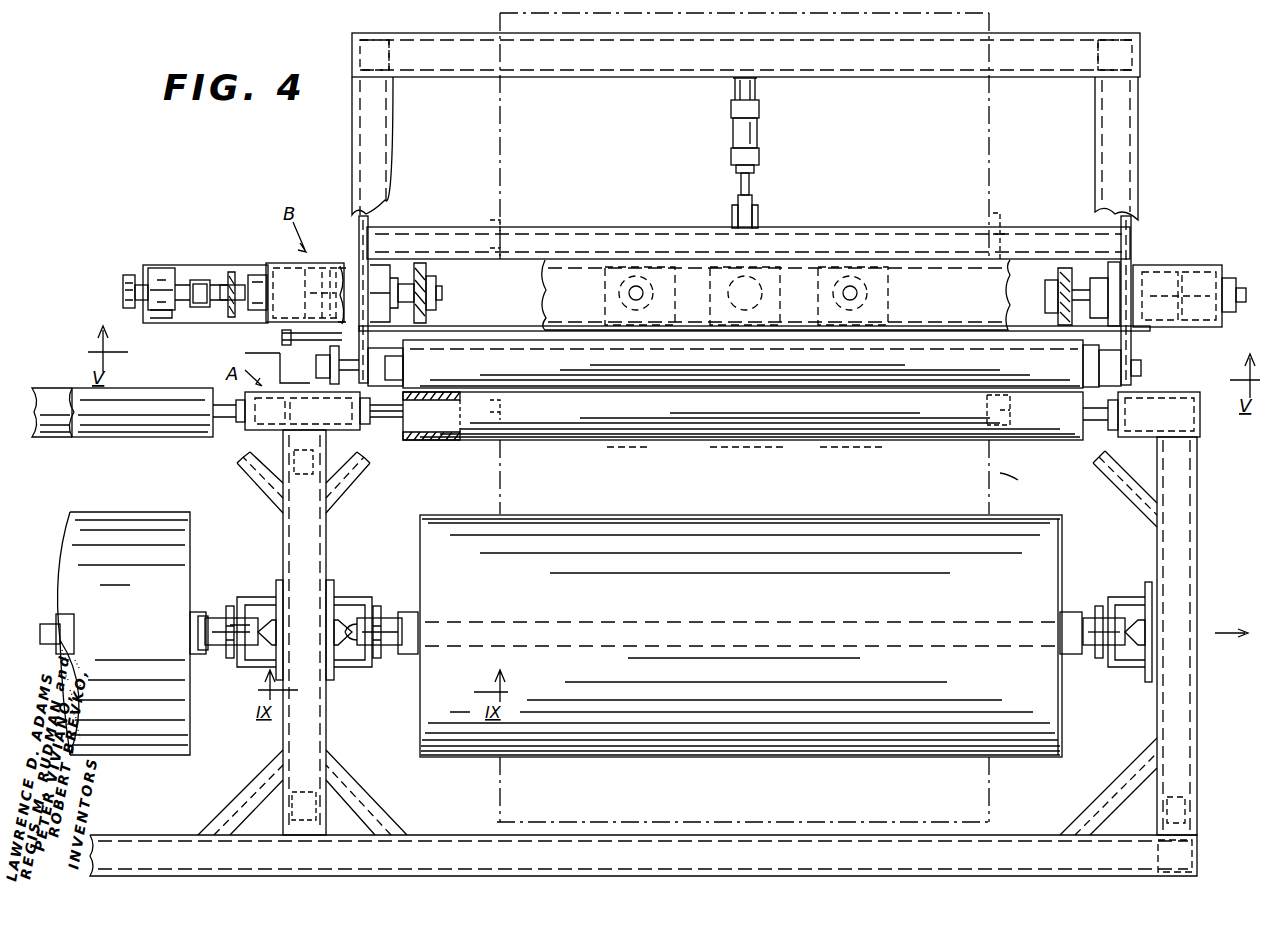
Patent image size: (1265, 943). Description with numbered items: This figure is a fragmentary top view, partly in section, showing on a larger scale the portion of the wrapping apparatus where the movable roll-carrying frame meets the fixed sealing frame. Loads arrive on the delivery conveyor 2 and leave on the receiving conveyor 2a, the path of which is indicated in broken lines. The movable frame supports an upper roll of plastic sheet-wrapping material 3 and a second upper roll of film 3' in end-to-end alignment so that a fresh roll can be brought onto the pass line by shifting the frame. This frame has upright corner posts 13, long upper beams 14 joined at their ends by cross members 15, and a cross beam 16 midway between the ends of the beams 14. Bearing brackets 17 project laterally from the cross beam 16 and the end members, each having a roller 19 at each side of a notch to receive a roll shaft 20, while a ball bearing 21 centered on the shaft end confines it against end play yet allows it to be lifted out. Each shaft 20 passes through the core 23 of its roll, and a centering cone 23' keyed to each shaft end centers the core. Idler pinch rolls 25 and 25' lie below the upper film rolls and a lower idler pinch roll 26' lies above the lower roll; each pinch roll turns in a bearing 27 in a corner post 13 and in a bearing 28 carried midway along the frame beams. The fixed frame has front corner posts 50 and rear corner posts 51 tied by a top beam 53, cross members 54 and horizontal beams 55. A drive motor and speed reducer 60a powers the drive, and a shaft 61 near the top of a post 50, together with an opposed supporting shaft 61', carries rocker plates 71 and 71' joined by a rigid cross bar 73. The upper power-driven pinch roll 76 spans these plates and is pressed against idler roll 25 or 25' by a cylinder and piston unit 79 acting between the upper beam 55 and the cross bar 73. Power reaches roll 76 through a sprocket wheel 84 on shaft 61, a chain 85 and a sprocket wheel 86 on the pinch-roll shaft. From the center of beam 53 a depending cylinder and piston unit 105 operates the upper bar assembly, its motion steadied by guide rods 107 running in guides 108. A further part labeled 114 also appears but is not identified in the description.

The delivery conveyor 2 is at (1011, 441).
The receiving conveyor 2a is at (990, 136).
The upper roll of plastic sheet-wrapping material 3 is at (741, 651).
The upper roll of film 3' is at (124, 649).
The upright corner posts 13 is at (1165, 392).
The upper beams 14 is at (456, 835).
The cross members 15 is at (1197, 558).
The cross beam 16 is at (326, 742).
The bearing brackets 17 is at (233, 666).
The roller 19 is at (383, 610).
The roll shafts 20 is at (215, 618).
The ball bearing 21 is at (352, 624).
The core 23 is at (50, 615).
The centering cone 23' is at (636, 652).
The upper idler pinch roll 25 is at (755, 434).
The upper idler pinch roll 25' is at (142, 430).
The lower idler pinch roll 26' is at (53, 430).
The bearing 27 is at (1110, 428).
The bearing 28 is at (246, 428).
The front corner posts 50 is at (283, 268).
The rear corner posts 51 is at (348, 42).
The beam 53 is at (1145, 268).
The cross members 54 is at (358, 128).
The horizontal beams 55 is at (484, 70).
The drive motor and speed reducer 60a is at (162, 272).
The shaft 61 is at (364, 293).
The supporting shaft 61' is at (1038, 298).
The rocker plate 71 is at (345, 280).
The rocker plate 71' is at (1153, 289).
The cross bar 73 is at (637, 230).
The upper power-driven pinch roll 76 is at (503, 345).
The cylinder and piston unit 79 is at (760, 137).
The sprocket wheel 84 is at (336, 278).
The chain 85 is at (332, 270).
The sprocket wheel 86 is at (316, 358).
The cylinder and piston unit 105 is at (772, 260).
The guide rods 107 is at (626, 296).
The guides 108 is at (655, 287).
The support bar 114 is at (460, 338).